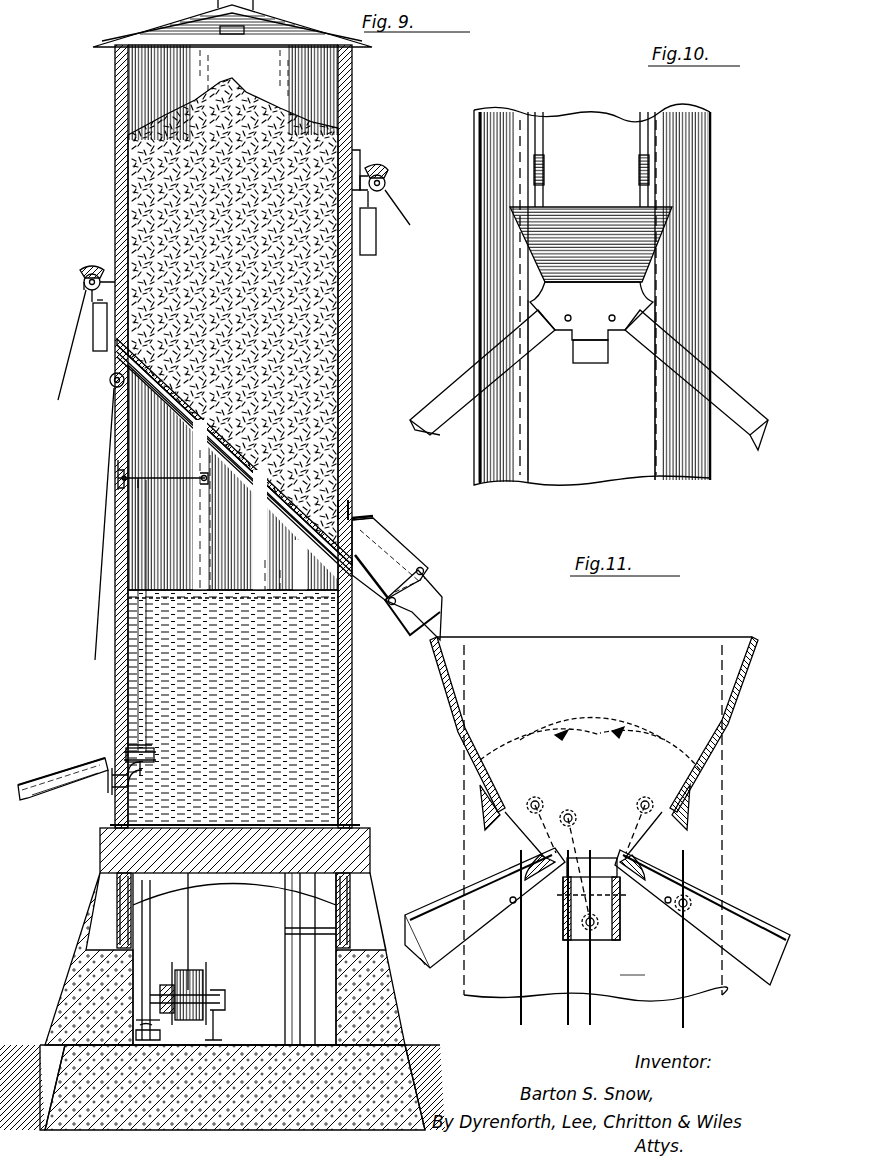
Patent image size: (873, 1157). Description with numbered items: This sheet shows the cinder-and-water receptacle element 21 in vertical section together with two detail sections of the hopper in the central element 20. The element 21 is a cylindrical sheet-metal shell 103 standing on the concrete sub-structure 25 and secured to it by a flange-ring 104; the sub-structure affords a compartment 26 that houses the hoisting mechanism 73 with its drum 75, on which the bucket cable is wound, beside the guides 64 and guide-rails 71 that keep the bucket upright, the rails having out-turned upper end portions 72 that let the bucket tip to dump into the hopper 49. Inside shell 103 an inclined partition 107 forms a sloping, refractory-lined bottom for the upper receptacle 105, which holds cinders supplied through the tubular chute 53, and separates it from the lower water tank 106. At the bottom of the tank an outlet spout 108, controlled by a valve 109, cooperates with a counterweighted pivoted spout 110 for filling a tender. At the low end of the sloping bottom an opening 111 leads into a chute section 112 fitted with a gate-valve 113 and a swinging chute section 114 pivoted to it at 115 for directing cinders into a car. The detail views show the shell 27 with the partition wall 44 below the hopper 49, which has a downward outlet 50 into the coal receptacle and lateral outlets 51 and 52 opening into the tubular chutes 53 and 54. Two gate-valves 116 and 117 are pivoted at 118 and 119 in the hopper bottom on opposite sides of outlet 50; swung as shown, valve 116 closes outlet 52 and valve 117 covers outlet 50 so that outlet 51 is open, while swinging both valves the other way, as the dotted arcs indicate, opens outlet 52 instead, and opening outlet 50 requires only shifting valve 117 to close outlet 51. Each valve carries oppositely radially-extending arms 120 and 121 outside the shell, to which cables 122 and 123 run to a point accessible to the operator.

In FIG. 10, the centrally located element 20 is at (712, 157).
In FIG. 9, the receptacle-forming element 21 is at (115, 108).
In FIG. 9, the sub-structure 25 is at (90, 992).
In FIG. 9, the compartment 26 is at (234, 959).
In FIG. 10, the shell 27 is at (712, 187).
In FIG. 10, the wall 44 is at (600, 421).
In FIG. 11, the wall 44 is at (632, 966).
In FIG. 10, the hopper-structure 49 is at (591, 285).
In FIG. 11, the hopper-structure 49 is at (594, 819).
In FIG. 11, the outlet 50 is at (592, 898).
In FIG. 11, the outlet 51 is at (484, 807).
In FIG. 11, the outlet 52 is at (682, 808).
In FIG. 10, the tubular chute 53 is at (440, 400).
In FIG. 11, the tubular chute 53 is at (448, 888).
In FIG. 10, the tubular chute 54 is at (738, 400).
In FIG. 11, the tubular chute 54 is at (748, 888).
In FIG. 9, the guides 64 is at (303, 982).
In FIG. 10, the guides 64 is at (591, 159).
In FIG. 9, the guide-rails 71 is at (285, 1005).
In FIG. 10, the out-turned upper end portions 72 is at (643, 160).
In FIG. 9, the hoisting mechanism 73 is at (188, 956).
In FIG. 9, the drum 75 is at (200, 995).
In FIG. 9, the shell 103 is at (355, 667).
In FIG. 9, the flange-ring 104 is at (355, 820).
In FIG. 9, the upper receptacle 105 is at (353, 300).
In FIG. 9, the lower receptacle or tank 106 is at (335, 738).
In FIG. 9, the inclined partition 107 is at (250, 490).
In FIG. 9, the outlet spout 108 is at (105, 758).
In FIG. 9, the valve 109 is at (148, 748).
In FIG. 9, the pivoted spout 110 is at (62, 770).
In FIG. 9, the opening 111 is at (355, 475).
In FIG. 9, the chute section 112 is at (388, 551).
In FIG. 9, the gate-valve 113 is at (388, 528).
In FIG. 9, the swinging chute section 114 is at (420, 610).
In FIG. 9, the pivot 115 is at (387, 607).
In FIG. 11, the gate-valve 116 is at (688, 782).
In FIG. 11, the gate-valve 117 is at (635, 812).
In FIG. 10, the pivot 118 is at (612, 315).
In FIG. 11, the pivot 118 is at (645, 862).
In FIG. 10, the pivot 119 is at (568, 315).
In FIG. 11, the pivot 119 is at (560, 814).
In FIG. 11, the radially-extending arm 120 is at (540, 800).
In FIG. 11, the radially-extending arm 121 is at (690, 888).
In FIG. 11, the cable 122 is at (523, 1005).
In FIG. 11, the cable 123 is at (683, 1008).